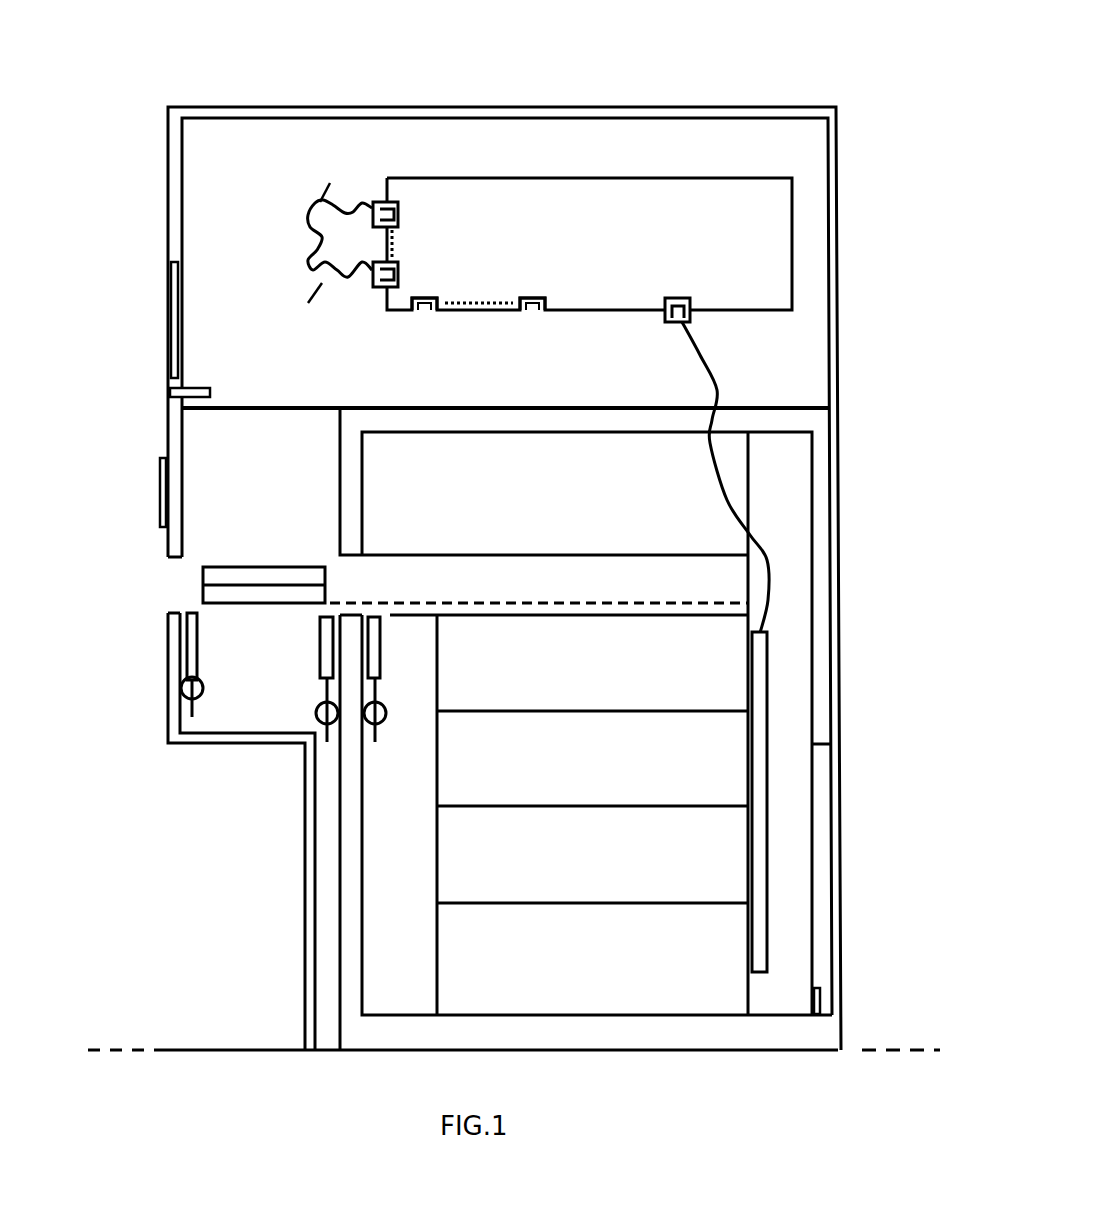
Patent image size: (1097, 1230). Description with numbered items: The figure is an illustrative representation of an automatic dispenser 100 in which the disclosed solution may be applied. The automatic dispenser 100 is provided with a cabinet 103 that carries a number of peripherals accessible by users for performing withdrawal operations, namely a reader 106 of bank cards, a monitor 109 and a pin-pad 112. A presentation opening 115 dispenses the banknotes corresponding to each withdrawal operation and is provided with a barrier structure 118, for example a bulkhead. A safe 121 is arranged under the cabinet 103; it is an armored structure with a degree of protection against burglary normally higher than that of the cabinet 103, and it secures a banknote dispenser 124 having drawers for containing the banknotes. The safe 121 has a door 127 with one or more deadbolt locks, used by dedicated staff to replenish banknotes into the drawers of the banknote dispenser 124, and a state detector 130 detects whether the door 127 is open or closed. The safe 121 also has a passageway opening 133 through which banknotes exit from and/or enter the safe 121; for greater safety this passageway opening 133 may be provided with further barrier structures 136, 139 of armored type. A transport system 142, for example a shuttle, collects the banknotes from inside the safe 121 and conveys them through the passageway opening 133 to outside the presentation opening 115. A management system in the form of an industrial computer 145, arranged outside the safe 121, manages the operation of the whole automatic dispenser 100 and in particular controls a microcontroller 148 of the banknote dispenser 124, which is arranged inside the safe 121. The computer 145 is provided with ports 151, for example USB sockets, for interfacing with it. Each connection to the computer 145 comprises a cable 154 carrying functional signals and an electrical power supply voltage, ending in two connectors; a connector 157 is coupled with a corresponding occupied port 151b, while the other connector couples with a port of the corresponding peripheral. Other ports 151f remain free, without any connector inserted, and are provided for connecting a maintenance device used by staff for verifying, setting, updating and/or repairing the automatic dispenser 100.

The automatic dispenser 100 is at (587, 65).
The cabinet 103 is at (288, 106).
The reader 106 is at (167, 387).
The monitor 109 is at (167, 312).
The pin-pad 112 is at (160, 508).
The presentation opening 115 is at (195, 598).
The barrier structure 118 is at (186, 627).
The safe 121 is at (432, 408).
The banknote dispenser 124 is at (547, 553).
The door 127 is at (825, 845).
The state detector 130 is at (823, 991).
The passageway opening 133 is at (390, 596).
The further barrier structure 136 is at (382, 645).
The further barrier structure 139 is at (320, 628).
The transport system 142 is at (230, 567).
The computer 145 is at (556, 178).
The microcontroller 148 is at (762, 741).
The ports 151 is at (572, 256).
The occupied port 151b is at (398, 215).
The free port 151f is at (420, 305).
The cable 154 is at (357, 203).
The connector 157 is at (380, 203).